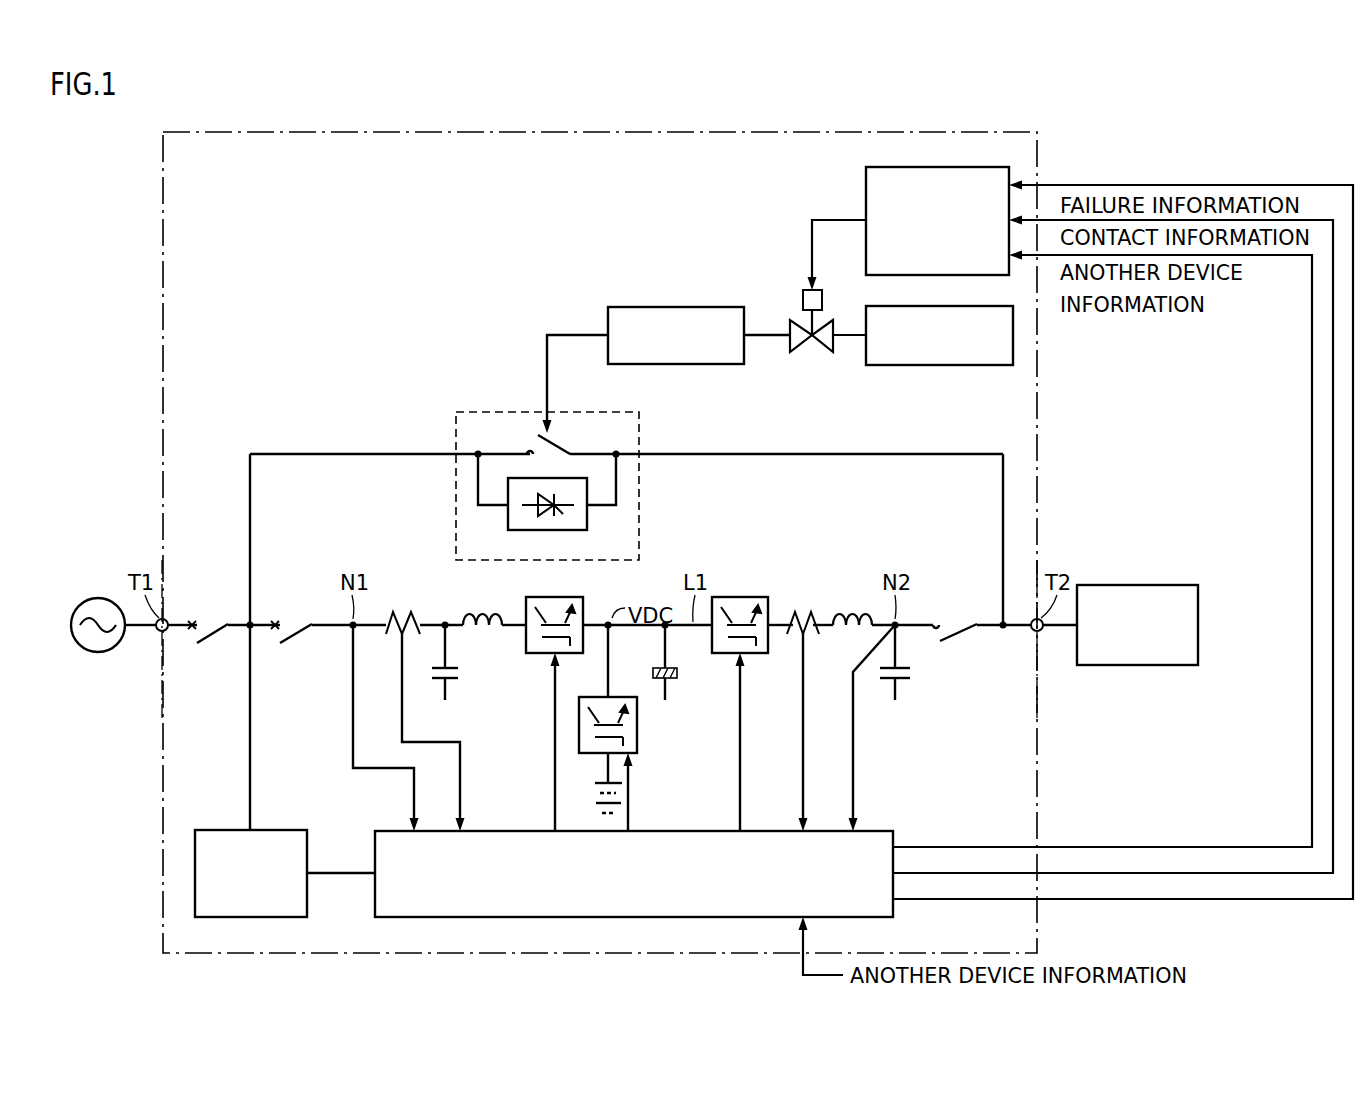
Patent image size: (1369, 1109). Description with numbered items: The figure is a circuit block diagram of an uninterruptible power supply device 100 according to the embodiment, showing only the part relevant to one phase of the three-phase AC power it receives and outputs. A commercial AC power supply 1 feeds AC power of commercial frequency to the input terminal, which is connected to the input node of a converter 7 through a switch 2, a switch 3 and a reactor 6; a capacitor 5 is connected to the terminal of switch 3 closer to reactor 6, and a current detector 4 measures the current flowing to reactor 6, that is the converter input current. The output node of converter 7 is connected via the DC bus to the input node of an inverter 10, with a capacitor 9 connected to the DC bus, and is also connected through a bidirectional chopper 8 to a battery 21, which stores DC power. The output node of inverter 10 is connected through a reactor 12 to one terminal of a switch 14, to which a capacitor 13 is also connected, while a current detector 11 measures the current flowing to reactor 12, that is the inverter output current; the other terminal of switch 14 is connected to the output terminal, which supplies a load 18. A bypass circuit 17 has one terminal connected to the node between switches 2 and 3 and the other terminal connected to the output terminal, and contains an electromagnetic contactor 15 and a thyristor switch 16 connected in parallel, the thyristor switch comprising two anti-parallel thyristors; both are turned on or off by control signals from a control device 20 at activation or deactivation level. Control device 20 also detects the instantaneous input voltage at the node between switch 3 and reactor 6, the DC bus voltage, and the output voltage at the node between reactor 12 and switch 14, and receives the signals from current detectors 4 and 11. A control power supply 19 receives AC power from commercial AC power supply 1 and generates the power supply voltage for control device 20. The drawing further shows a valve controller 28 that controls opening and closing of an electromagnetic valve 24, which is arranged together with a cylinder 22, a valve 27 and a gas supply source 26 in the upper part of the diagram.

The commercial AC power supply 1 is at (98, 652).
The switch 2 is at (213, 636).
The switch 3 is at (296, 636).
The current detector 4 is at (402, 613).
The capacitor 5 is at (460, 668).
The reactor 6 is at (481, 613).
The converter 7 is at (555, 598).
The bidirectional chopper 8 is at (637, 722).
The capacitor 9 is at (651, 668).
The inverter 10 is at (740, 598).
The current detector 11 is at (806, 613).
The reactor 12 is at (852, 613).
The capacitor 13 is at (912, 673).
The switch 14 is at (962, 637).
The electromagnetic contactor 15 is at (572, 447).
The thyristor switch 16 is at (570, 530).
The bypass circuit 17 is at (605, 412).
The load 18 is at (1150, 665).
The control power supply 19 is at (262, 917).
The control device 20 is at (643, 917).
The battery 21 is at (599, 782).
The cylinder 22 is at (683, 307).
The electromagnetic valve 24 is at (803, 300).
The gas supply source 26 is at (972, 365).
The valve 27 is at (845, 330).
The valve controller 28 is at (979, 167).
The uninterruptible power supply device 100 is at (222, 132).